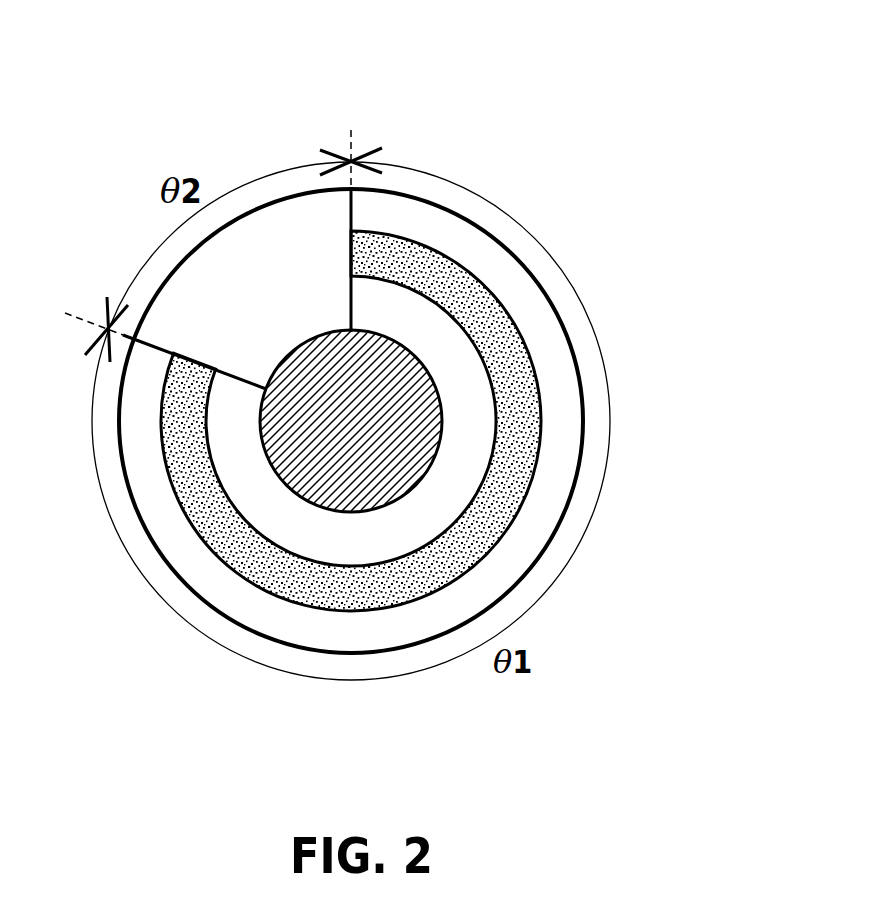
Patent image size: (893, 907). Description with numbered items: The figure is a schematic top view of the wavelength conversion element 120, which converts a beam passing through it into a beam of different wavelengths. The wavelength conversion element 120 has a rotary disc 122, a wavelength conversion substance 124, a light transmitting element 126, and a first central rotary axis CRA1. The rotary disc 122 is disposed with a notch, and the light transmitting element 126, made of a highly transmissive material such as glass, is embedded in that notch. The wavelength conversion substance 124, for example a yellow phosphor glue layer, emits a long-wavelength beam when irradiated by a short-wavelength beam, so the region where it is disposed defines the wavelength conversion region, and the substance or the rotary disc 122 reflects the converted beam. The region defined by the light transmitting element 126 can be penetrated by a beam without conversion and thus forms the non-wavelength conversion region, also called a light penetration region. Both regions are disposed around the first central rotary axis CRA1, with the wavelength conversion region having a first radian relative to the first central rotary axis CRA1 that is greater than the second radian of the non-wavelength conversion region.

The wavelength conversion element 120 is at (715, 688).
The rotary disc 122 is at (558, 365).
The wavelength conversion substance 124 is at (482, 312).
The light transmitting element 126 is at (293, 223).
The first central rotary axis CRA1 is at (338, 475).